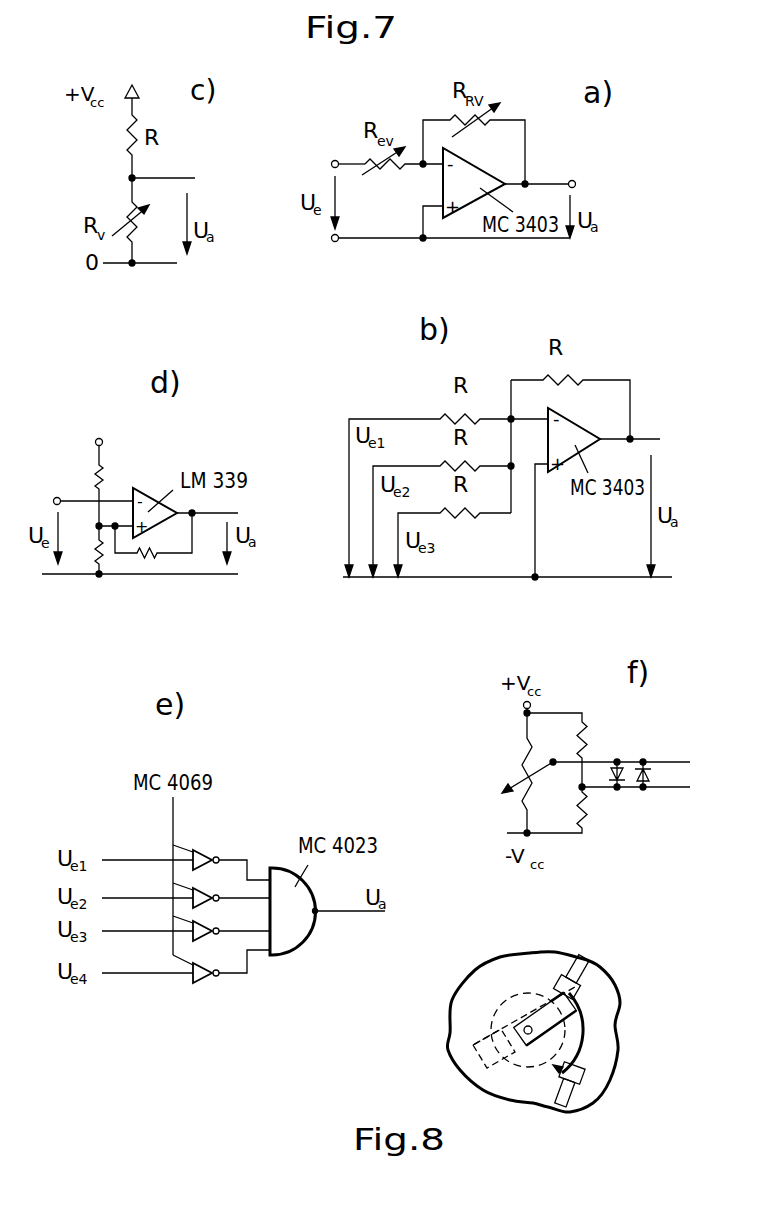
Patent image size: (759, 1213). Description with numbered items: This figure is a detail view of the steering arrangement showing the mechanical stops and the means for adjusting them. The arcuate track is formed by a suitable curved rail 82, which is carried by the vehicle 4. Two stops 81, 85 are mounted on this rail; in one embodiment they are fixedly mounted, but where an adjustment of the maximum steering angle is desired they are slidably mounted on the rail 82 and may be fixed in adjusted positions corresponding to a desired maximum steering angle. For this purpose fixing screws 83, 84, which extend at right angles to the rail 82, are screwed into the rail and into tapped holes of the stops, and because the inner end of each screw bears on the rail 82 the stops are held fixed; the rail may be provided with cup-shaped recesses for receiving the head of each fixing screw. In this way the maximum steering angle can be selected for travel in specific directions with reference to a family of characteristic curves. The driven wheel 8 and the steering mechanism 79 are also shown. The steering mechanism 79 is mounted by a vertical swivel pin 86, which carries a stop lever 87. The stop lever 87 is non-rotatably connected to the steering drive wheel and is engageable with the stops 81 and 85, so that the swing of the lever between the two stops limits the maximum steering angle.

The vehicle 4 is at (472, 1008).
The driven wheel 8 is at (488, 1053).
The steering mechanism 79 is at (508, 1007).
The stop 81 is at (587, 987).
The curved rail 82 is at (577, 1047).
The fixing screw 83 is at (550, 997).
The fixing screw 84 is at (553, 1065).
The stop 85 is at (582, 1082).
The vertical swivel pin 86 is at (523, 1042).
The stop lever 87 is at (583, 1000).